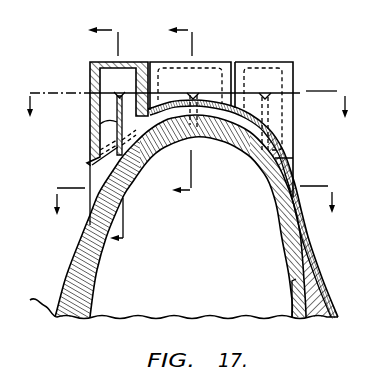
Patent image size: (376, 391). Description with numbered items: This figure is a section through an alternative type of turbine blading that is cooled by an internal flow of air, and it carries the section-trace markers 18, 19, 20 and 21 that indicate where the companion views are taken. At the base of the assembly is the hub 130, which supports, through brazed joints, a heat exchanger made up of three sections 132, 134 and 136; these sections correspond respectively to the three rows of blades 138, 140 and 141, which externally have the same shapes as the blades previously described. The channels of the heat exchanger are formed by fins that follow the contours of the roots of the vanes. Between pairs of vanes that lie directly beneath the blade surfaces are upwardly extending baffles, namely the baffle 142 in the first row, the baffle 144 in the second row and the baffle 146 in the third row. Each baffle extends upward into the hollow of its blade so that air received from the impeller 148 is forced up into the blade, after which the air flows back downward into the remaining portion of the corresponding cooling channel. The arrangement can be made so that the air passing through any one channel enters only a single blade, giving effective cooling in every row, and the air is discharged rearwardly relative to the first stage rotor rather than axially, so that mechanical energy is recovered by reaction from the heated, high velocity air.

The hub 130 is at (118, 198).
The heat exchanger section 132 is at (141, 152).
The heat exchanger section 134 is at (211, 146).
The heat exchanger section 136 is at (268, 195).
The blade 138 is at (122, 63).
The blade 140 is at (203, 62).
The blade 141 is at (266, 62).
The baffle 142 is at (90, 130).
The baffle 144 is at (192, 92).
The baffle 146 is at (270, 108).
The impeller 148 is at (30, 300).
The section line 18- 18 is at (188, 93).
The section line 19- 19 is at (194, 189).
The section line 20- 20 is at (112, 136).
The section line 21- 21 is at (186, 111).